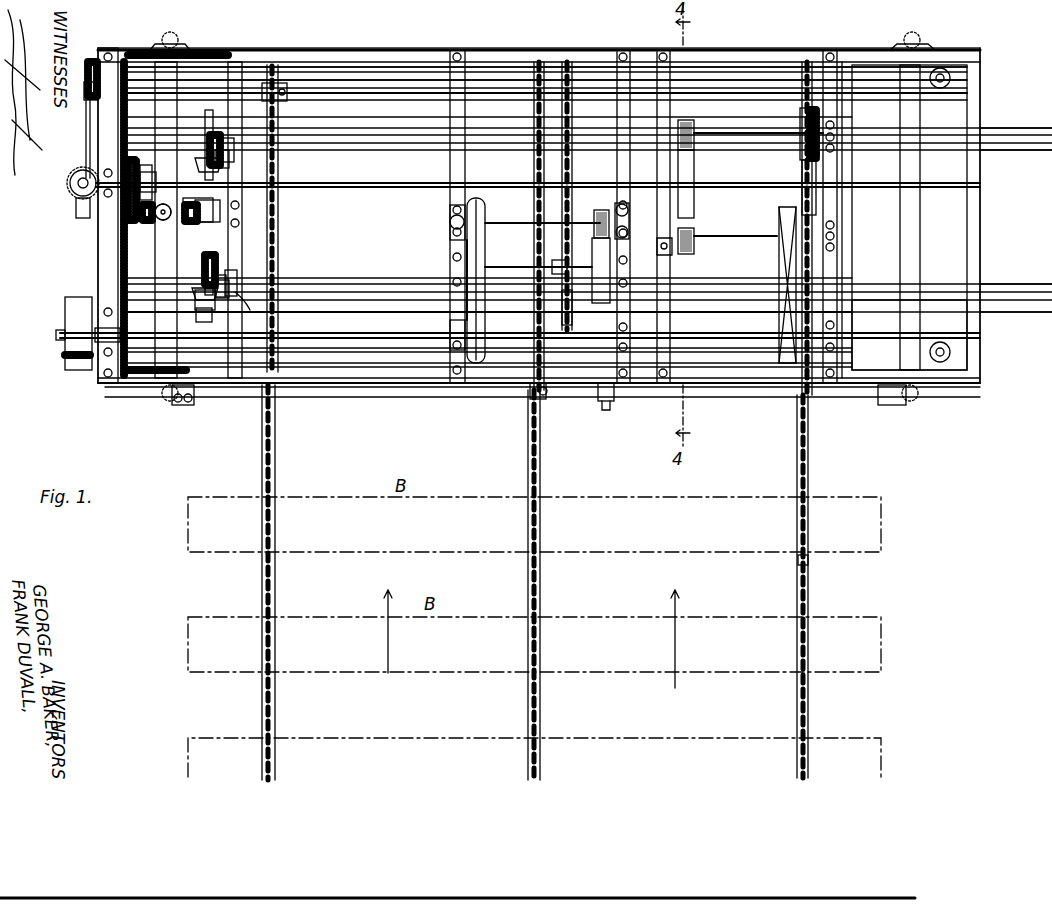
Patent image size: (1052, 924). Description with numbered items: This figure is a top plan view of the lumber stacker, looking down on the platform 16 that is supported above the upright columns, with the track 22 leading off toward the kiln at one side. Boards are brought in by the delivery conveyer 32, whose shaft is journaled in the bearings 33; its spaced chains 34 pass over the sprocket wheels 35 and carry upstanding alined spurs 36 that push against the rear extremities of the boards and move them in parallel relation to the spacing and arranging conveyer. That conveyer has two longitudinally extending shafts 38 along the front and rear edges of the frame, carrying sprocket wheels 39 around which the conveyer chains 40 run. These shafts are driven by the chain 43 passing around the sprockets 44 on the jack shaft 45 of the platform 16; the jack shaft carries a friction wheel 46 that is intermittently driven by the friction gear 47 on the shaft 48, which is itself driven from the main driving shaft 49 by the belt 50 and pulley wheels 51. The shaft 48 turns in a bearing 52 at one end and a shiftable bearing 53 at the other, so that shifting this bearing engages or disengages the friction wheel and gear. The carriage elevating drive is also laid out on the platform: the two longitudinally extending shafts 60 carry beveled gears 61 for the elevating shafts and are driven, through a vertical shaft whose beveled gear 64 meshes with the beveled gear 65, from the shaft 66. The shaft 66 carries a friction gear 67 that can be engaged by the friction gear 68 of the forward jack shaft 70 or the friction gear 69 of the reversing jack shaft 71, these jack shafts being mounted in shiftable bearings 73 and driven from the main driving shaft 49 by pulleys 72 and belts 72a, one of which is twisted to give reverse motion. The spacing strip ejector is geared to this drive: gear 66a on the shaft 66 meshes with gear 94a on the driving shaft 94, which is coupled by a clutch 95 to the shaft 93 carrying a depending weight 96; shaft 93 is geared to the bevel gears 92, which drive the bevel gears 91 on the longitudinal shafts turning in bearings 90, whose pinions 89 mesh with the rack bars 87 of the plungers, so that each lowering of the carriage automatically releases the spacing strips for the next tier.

The platform 16 is at (760, 58).
The track 22 is at (1033, 288).
The delivery conveyer 32 is at (808, 602).
The bearings 33 is at (183, 403).
The spaced chains 34 is at (262, 580).
The sprocket wheels 35 is at (546, 395).
The spurs 36 is at (800, 565).
The longitudinally extending shafts 38 is at (312, 92).
The sprocket wheels 39 is at (282, 83).
The conveyer chains 40 is at (278, 217).
The chain 43 is at (562, 166).
The sprockets 44 is at (567, 305).
The jack shaft 45 is at (507, 266).
The friction wheel 46 is at (592, 252).
The friction gear 47 is at (605, 218).
The shaft 48 is at (506, 222).
The main driving shaft 49 is at (326, 314).
The belt 50 is at (467, 248).
The pulley wheels 51 is at (447, 235).
The bearing 52 is at (448, 218).
The shiftable bearing 53 is at (620, 205).
The longitudinally extending shafts 60 is at (348, 85).
The beveled gears 61 is at (94, 68).
The beveled gear 64 is at (70, 183).
The beveled gear 65 is at (76, 205).
The shaft 66 is at (322, 180).
The gear 66a is at (148, 178).
The friction gear 67 is at (694, 205).
The friction gear 68 is at (694, 246).
The friction gear 69 is at (694, 135).
The forward jack shaft 70 is at (748, 238).
The reversing jack shaft 71 is at (750, 135).
The pulleys 72 is at (800, 160).
The belts 72a is at (802, 195).
The shiftable bearings 73 is at (672, 250).
The rack bars 87 is at (240, 296).
The pinions 89 is at (232, 155).
The bearings 90 is at (225, 280).
The bevel gears 91 is at (215, 138).
The bevel gears 92 is at (200, 160).
The shaft 93 is at (163, 220).
The driving shaft 94 is at (142, 212).
The gear 94a is at (163, 225).
The clutch 95 is at (128, 240).
The weight 96 is at (165, 205).